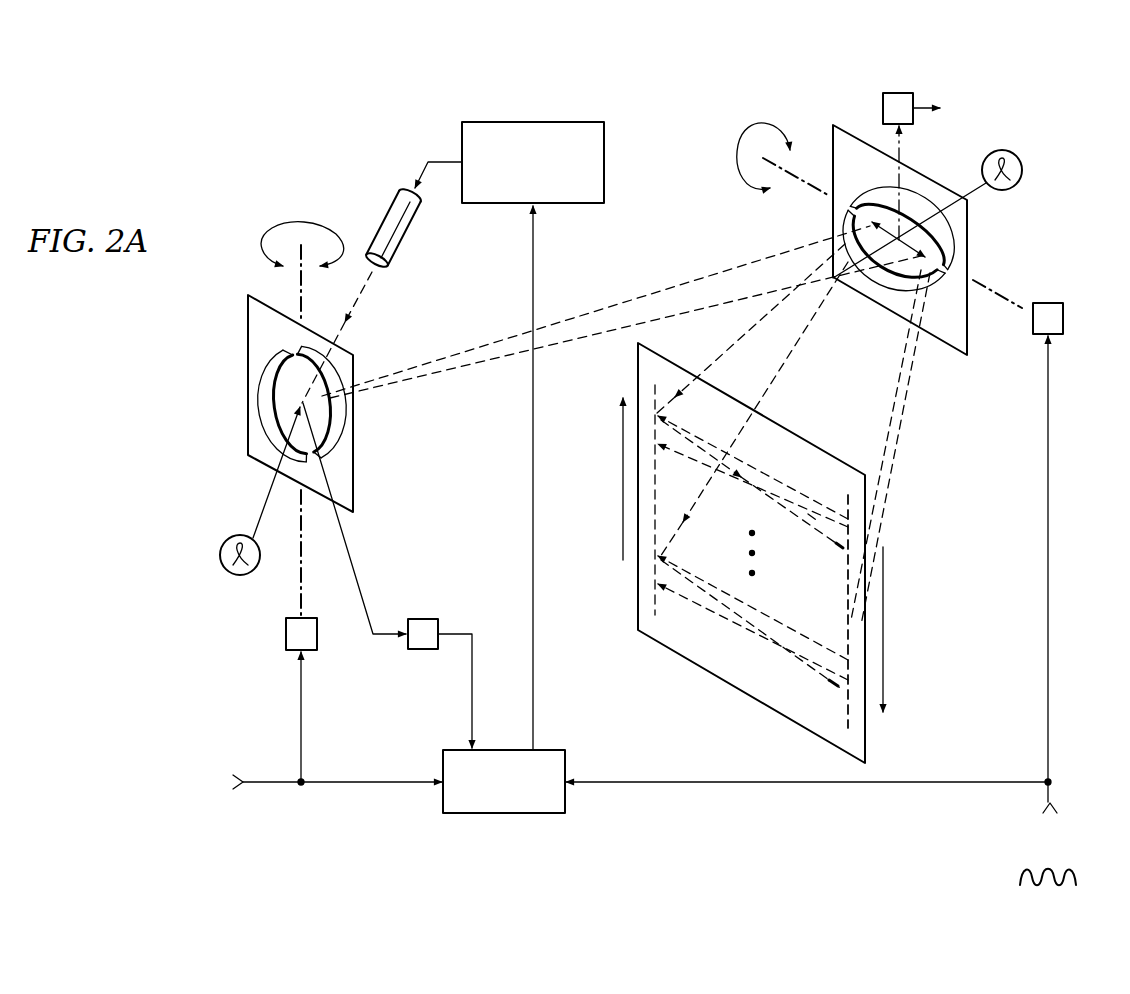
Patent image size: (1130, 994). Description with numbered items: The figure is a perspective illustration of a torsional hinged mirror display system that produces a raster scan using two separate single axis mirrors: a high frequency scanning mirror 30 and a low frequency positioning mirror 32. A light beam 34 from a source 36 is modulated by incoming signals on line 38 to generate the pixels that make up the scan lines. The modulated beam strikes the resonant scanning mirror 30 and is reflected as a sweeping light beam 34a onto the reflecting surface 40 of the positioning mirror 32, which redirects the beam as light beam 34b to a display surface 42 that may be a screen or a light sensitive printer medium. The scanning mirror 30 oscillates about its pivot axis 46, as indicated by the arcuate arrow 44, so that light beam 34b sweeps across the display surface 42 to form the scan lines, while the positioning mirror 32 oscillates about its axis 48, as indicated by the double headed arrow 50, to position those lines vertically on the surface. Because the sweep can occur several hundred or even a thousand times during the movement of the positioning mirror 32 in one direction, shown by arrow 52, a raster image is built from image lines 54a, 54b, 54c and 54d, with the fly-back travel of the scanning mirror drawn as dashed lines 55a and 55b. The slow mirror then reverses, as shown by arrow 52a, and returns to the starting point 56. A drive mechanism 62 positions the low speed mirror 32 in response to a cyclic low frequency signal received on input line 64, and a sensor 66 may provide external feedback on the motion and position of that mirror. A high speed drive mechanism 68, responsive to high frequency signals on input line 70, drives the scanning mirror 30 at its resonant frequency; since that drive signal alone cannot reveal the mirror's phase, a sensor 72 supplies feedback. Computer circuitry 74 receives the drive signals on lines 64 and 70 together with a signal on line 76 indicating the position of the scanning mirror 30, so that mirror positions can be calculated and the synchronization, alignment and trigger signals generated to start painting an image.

The high frequency scanning single axis torsional hinged mirror 30 is at (221, 334).
The low frequency positioning single axis torsional hinged mirror 32 is at (986, 241).
The light beam 34 is at (372, 283).
The sweeping light beam 34a is at (614, 306).
The modulated light beam redirected to display surface 34b is at (727, 352).
The light source 36 is at (387, 225).
The incoming signal line 38 is at (440, 160).
The reflecting surface 40 is at (885, 215).
The display surface 42 is at (730, 677).
The arcuate arrow 44 is at (278, 224).
The pivot axis 46 is at (302, 301).
The axis 48 is at (815, 193).
The double headed arrow 50 is at (763, 122).
The arrow 52 is at (884, 634).
The arrow 52a is at (625, 484).
The image line 54a is at (755, 473).
The image line 54b is at (810, 532).
The image line 54c is at (701, 567).
The image line 54d is at (752, 636).
The fly-back dashed line 55a is at (776, 497).
The fly-back dashed line 55b is at (717, 600).
The starting point 56 is at (847, 623).
The drive mechanism 62 is at (1064, 318).
The input line 64 is at (788, 785).
The sensor 66 is at (905, 92).
The high speed drive mechanism 68 is at (285, 634).
The input line 70 is at (355, 786).
The sensor 72 is at (418, 651).
The computer circuitry 74 is at (284, 391).
The line 76 is at (220, 556).